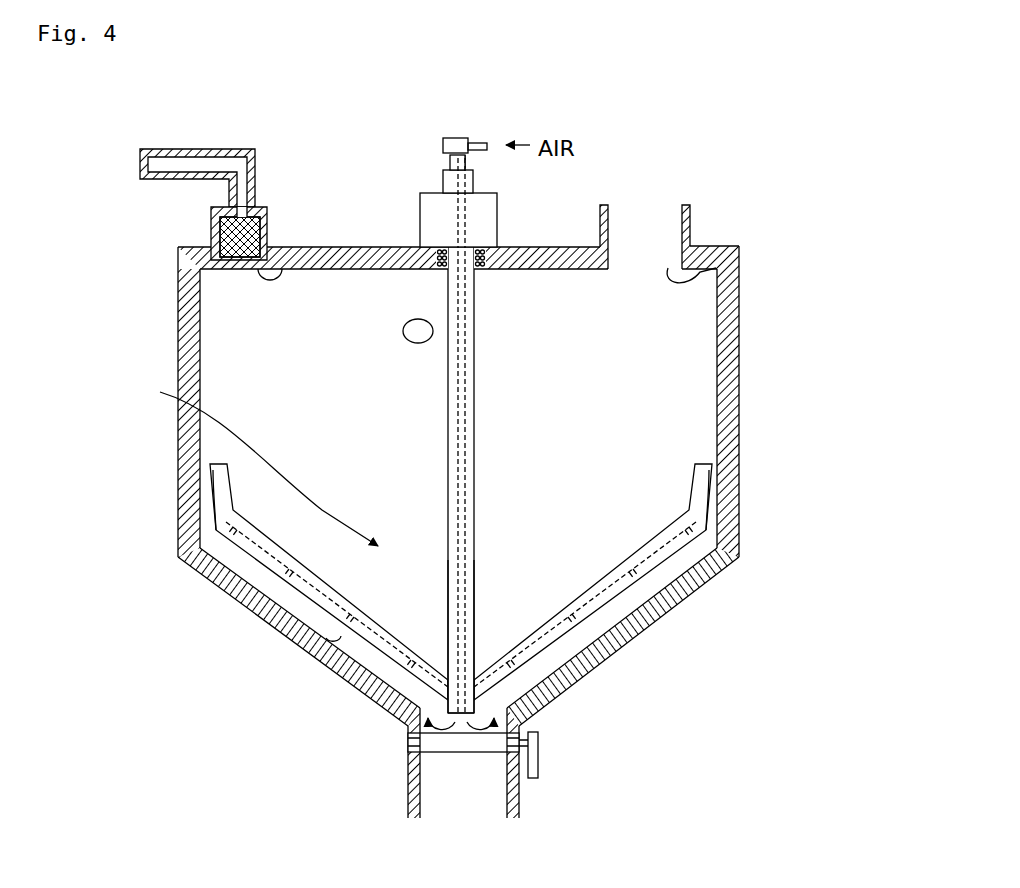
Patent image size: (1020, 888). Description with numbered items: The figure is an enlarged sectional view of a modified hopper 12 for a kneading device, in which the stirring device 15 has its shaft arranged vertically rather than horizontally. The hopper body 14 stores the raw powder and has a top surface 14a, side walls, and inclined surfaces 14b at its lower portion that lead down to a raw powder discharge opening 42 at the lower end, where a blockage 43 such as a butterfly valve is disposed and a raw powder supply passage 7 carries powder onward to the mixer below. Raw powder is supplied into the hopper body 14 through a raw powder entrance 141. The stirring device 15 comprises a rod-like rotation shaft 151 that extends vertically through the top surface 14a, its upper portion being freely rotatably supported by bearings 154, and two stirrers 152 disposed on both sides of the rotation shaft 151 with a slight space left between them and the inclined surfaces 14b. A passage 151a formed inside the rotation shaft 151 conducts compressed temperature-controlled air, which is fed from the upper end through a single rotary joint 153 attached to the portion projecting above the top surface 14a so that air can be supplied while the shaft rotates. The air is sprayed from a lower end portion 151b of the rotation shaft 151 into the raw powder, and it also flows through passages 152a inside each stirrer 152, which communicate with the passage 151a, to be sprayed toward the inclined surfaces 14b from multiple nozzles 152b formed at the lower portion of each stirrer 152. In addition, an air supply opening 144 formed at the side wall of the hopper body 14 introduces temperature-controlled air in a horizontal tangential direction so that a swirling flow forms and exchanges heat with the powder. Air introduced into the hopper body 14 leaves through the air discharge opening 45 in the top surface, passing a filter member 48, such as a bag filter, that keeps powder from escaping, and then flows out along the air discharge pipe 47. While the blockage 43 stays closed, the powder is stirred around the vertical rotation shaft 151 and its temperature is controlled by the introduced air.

The raw powder supply passage 7 is at (403, 810).
The hopper 12 is at (716, 179).
The hopper body 14 is at (740, 446).
The top surface 14a is at (389, 247).
The inclined surfaces 14b is at (330, 633).
The stirring device 15 is at (254, 460).
The raw powder discharge opening 42 is at (432, 764).
The blockage 43 is at (478, 746).
The air discharge opening 45 is at (272, 277).
The air discharge pipe 47 is at (190, 148).
The filter member 48 is at (212, 228).
The raw powder entrance 141 is at (700, 271).
The air supply opening 144 is at (403, 331).
The rotation shaft 151 is at (447, 425).
The passage 151a is at (458, 592).
The lower end portion 151b is at (462, 715).
The stirrers 152 is at (220, 496).
The passages 152a is at (253, 553).
The nozzles 152b is at (315, 597).
The rotary joint 153 is at (428, 182).
The bearings 154 is at (499, 246).